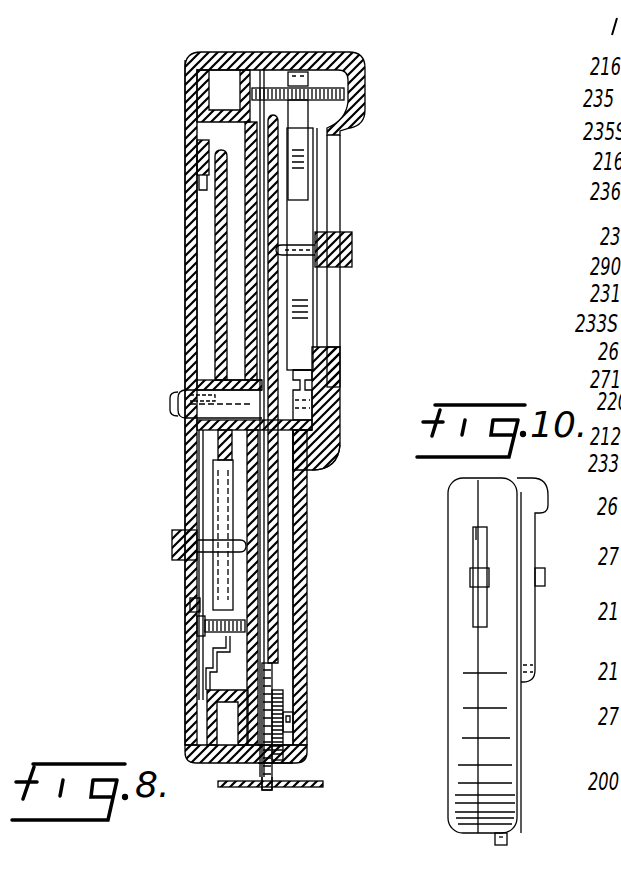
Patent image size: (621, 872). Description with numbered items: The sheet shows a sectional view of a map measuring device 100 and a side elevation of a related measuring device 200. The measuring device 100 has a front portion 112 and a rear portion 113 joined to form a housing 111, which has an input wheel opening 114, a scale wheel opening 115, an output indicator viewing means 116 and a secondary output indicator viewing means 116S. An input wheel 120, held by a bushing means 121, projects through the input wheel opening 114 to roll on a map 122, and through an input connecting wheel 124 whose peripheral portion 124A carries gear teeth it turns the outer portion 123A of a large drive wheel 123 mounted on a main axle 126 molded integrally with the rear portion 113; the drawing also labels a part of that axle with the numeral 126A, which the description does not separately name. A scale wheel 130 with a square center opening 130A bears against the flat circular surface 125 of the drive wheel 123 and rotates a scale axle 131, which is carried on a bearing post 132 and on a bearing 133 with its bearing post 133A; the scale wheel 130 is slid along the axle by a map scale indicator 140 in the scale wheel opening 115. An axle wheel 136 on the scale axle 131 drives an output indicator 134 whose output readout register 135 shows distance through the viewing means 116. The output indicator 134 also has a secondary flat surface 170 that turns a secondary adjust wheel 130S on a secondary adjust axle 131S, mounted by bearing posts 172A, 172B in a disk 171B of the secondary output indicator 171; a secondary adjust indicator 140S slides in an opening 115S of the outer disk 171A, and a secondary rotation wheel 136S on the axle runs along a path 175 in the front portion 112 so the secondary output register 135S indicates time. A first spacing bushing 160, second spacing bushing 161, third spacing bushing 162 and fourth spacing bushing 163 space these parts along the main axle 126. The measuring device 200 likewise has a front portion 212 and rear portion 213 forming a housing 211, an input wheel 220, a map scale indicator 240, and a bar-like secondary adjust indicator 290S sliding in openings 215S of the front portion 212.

In FIG. 8, the measuring device 100 is at (178, 209).
In FIG. 8, the housing 111 is at (306, 579).
In FIG. 8, the front portion 112 is at (190, 712).
In FIG. 8, the rear portion 113 is at (305, 622).
In FIG. 8, the input wheel opening 114 is at (272, 762).
In FIG. 8, the scale wheel opening 115 is at (330, 358).
In FIG. 8, the opening 115S is at (192, 598).
In FIG. 8, the output indicator viewing means 116 is at (185, 78).
In FIG. 8, the secondary output indicator viewing means 116S is at (185, 135).
In FIG. 8, the input wheel 120 is at (270, 788).
In FIG. 8, the bushing means 121 is at (293, 718).
In FIG. 8, the map 122 is at (245, 788).
In FIG. 8, the drive wheel 123 is at (258, 612).
In FIG. 8, the outer portion of drive wheel 123A is at (268, 114).
In FIG. 8, the input connecting wheel 124 is at (284, 735).
In FIG. 8, the peripheral portion 124A is at (275, 690).
In FIG. 8, the flat circular surface 125 is at (278, 205).
In FIG. 8, the main axle 126 is at (185, 410).
In FIG. 8, the pin knob 126A is at (176, 395).
In FIG. 8, the scale wheel 130 is at (302, 255).
In FIG. 8, the center opening 130A is at (318, 218).
In FIG. 8, the secondary adjust wheel 130S is at (228, 560).
In FIG. 8, the scale axle 131 is at (305, 167).
In FIG. 8, the secondary adjust axle 131S is at (222, 510).
In FIG. 8, the bearing post 132 is at (302, 66).
In FIG. 8, the bearing 133 is at (310, 416).
In FIG. 8, the bearing post 133A is at (312, 345).
In FIG. 8, the output indicator 134 is at (242, 90).
In FIG. 8, the output readout register 135 is at (199, 97).
In FIG. 8, the secondary output register 135S is at (199, 146).
In FIG. 8, the axle wheel 136 is at (346, 91).
In FIG. 8, the secondary rotation wheel 136S is at (200, 626).
In FIG. 8, the map scale indicator 140 is at (353, 250).
In FIG. 8, the secondary adjust indicator 140S is at (174, 543).
In FIG. 8, the first spacing bushing 160 is at (322, 382).
In FIG. 8, the second spacing bushing 161 is at (325, 445).
In FIG. 8, the third spacing bushing 162 is at (290, 458).
In FIG. 8, the fourth spacing bushing 163 is at (225, 452).
In FIG. 8, the secondary flat surface 170 is at (245, 272).
In FIG. 8, the secondary output indicator 171 is at (184, 241).
In FIG. 8, the disk 171A is at (187, 312).
In FIG. 8, the disk 171B is at (220, 350).
In FIG. 8, the bearing post 172A is at (215, 483).
In FIG. 8, the bearing post 172B is at (185, 660).
In FIG. 8, the path 175 is at (196, 178).
In FIG. 10, the measuring device 200 is at (444, 668).
In FIG. 10, the housing 211 is at (521, 710).
In FIG. 10, the front portion 212 is at (451, 769).
In FIG. 10, the rear portion 213 is at (520, 768).
In FIG. 10, the openings 215S is at (473, 530).
In FIG. 10, the input wheel 220 is at (508, 843).
In FIG. 10, the map scale indicator 240 is at (544, 574).
In FIG. 10, the secondary adjust indicator 290S is at (477, 581).